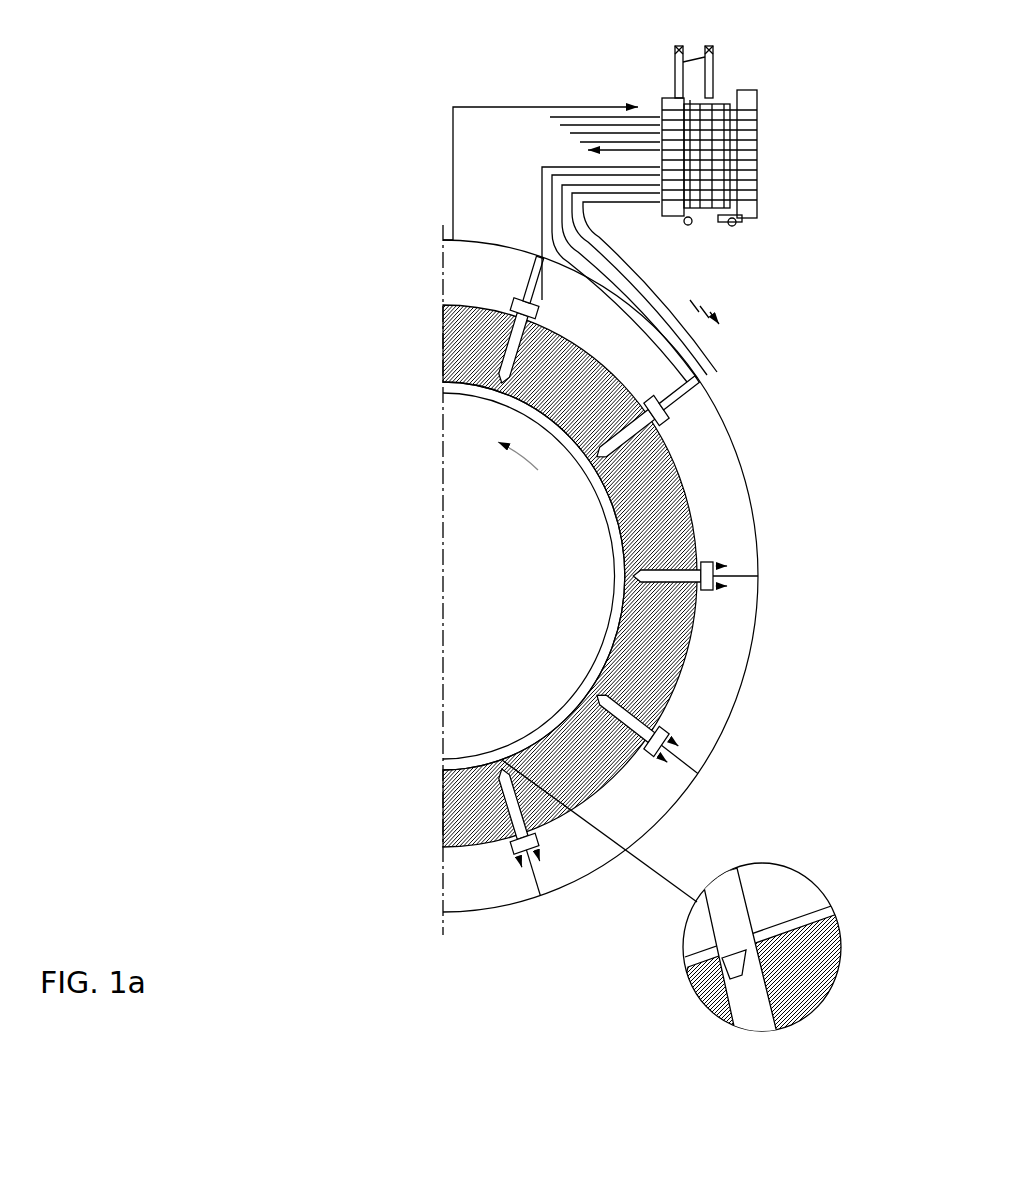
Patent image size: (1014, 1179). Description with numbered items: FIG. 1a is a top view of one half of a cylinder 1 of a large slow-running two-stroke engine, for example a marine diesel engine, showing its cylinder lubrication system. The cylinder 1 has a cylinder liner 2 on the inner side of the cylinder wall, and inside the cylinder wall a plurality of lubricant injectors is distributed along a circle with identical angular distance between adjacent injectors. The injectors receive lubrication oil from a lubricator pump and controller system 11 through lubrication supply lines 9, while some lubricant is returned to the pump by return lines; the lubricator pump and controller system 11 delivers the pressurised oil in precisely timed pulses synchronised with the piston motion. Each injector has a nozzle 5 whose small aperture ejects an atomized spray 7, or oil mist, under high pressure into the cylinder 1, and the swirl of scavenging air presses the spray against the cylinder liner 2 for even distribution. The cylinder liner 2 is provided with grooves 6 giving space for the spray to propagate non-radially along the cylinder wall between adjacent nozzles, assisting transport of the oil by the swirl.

The cylinder 1 is at (392, 404).
The cylinder liner 2 is at (613, 514).
The nozzle 5 is at (730, 953).
The groove 6 is at (768, 935).
The atomized spray 7 is at (532, 732).
The lubrication supply line 9 is at (540, 203).
The lubricator pump and controller system 11 is at (660, 77).